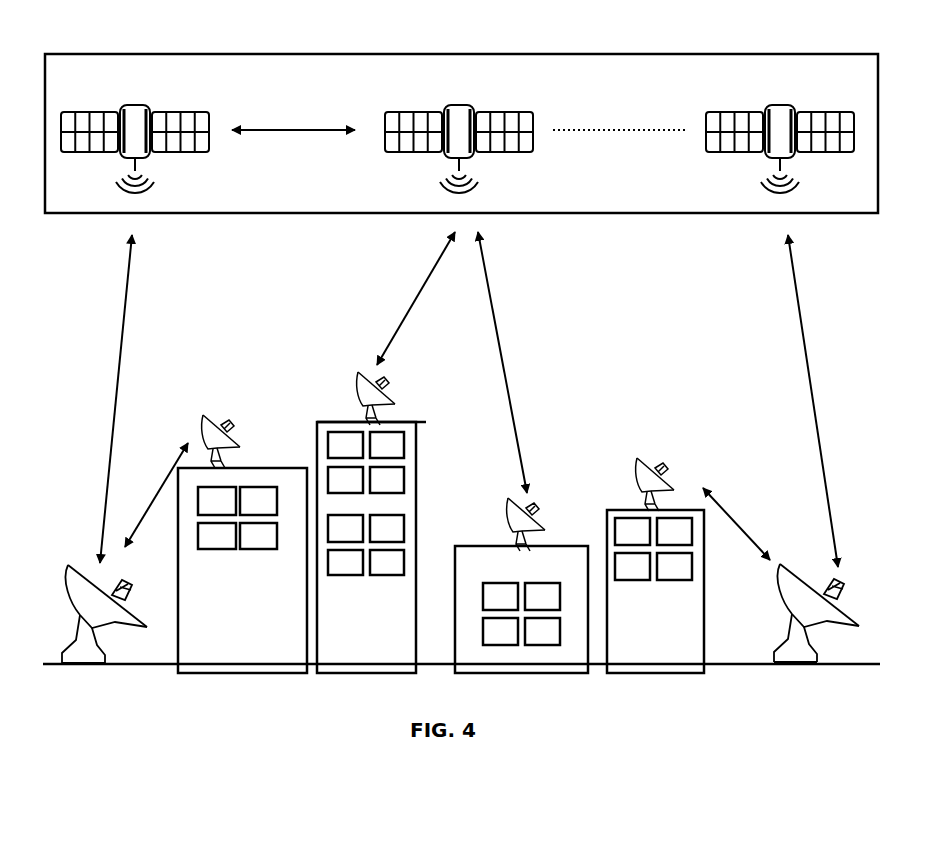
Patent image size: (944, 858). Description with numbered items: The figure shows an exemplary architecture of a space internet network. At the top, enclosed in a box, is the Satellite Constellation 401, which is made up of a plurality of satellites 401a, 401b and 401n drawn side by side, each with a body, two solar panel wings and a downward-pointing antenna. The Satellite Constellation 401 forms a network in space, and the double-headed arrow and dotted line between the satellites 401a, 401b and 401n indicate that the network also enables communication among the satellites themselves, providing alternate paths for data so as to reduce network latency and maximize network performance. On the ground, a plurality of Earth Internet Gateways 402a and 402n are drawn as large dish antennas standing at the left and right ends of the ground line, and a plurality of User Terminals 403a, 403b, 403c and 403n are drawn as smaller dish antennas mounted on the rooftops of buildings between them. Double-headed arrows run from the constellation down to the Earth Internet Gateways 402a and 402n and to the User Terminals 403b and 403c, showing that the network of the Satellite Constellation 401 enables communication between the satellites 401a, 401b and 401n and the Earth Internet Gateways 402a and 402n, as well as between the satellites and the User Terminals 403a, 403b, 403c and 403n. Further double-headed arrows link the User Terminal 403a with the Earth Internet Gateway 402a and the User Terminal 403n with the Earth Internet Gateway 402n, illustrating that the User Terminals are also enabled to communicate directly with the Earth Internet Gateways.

The Satellite Constellation 401 is at (337, 53).
The satellite 401a is at (158, 110).
The satellite 401b is at (460, 106).
The satellite 401n is at (780, 106).
The Earth Internet Gateway 402a is at (76, 562).
The Earth Internet Gateway 402n is at (786, 561).
The User Terminal 403a is at (242, 445).
The User Terminal 403b is at (393, 402).
The User Terminal 403c is at (511, 497).
The User Terminal 403n is at (680, 487).